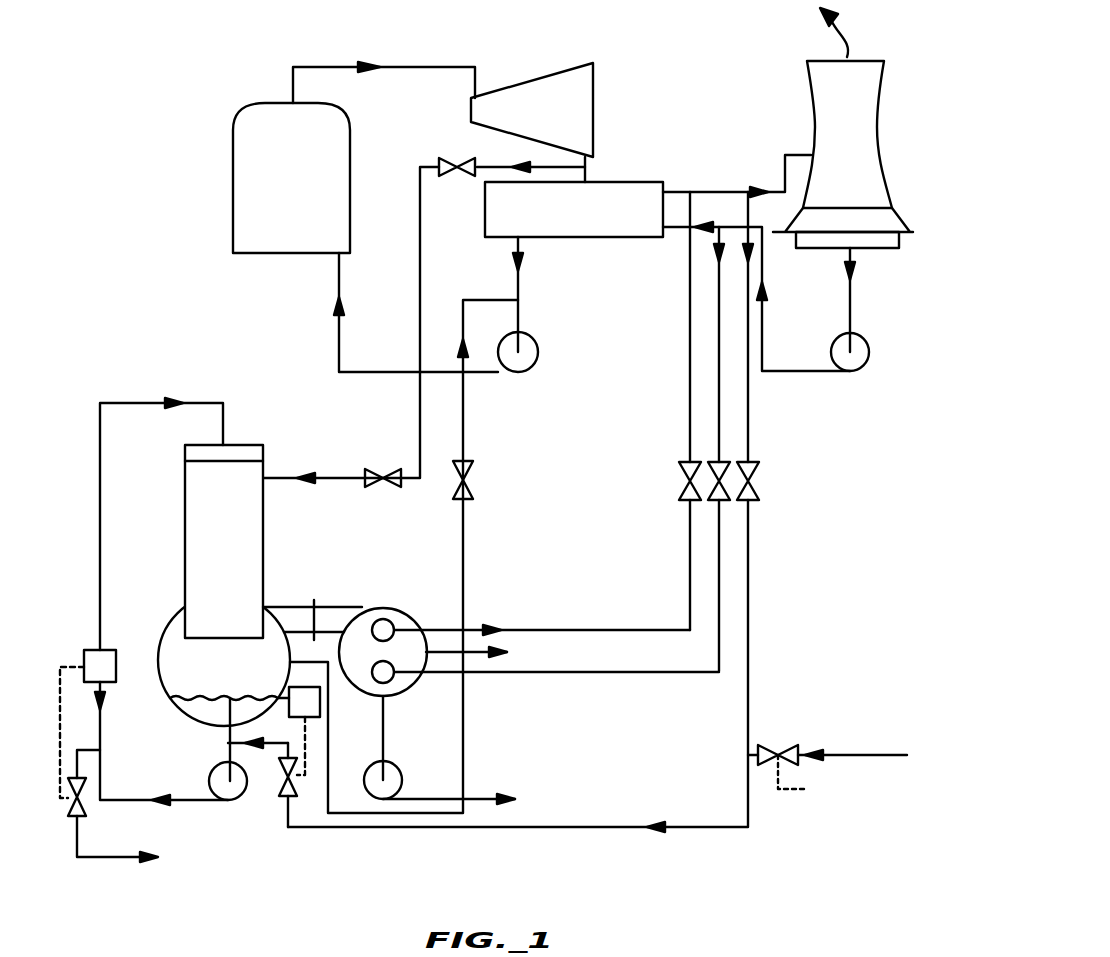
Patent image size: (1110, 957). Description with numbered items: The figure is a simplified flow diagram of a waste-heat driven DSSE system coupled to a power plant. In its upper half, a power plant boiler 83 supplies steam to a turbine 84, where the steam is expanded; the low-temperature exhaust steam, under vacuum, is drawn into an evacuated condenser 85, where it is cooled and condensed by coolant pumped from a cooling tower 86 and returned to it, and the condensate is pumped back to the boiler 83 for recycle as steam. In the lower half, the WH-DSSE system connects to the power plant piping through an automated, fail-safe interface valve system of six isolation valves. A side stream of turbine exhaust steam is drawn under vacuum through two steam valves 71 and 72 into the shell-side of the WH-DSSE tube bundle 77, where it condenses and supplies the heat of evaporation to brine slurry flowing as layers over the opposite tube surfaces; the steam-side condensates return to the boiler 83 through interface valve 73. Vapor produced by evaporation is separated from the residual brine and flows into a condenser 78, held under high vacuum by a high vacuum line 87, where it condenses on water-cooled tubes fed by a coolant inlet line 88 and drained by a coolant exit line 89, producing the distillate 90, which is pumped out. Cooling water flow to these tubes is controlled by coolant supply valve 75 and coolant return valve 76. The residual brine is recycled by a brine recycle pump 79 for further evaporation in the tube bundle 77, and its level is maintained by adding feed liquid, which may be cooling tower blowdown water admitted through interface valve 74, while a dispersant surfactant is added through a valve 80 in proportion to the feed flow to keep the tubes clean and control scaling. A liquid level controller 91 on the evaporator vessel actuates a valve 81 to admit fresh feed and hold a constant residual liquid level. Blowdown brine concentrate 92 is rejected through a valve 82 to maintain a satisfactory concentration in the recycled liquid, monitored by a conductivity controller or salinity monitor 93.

The steam valve 71 is at (466, 158).
The steam valve 72 is at (375, 469).
The interface valve 73 is at (470, 489).
The interface valve 74 is at (755, 488).
The coolant supply valve 75 is at (725, 462).
The coolant return valve 76 is at (682, 488).
The WH-DSSE tube bundle 77 is at (237, 609).
The condenser 78 is at (372, 657).
The brine recycle pump 79 is at (213, 770).
The valve 80 is at (827, 773).
The valve 81 is at (285, 795).
The valve 82 is at (88, 805).
The power plant boiler 83 is at (265, 103).
The turbine 84 is at (594, 88).
The condenser 85 is at (632, 182).
The cooling tower 86 is at (813, 97).
The high vacuum line 87 is at (509, 652).
The coolant inlet line 88 is at (592, 671).
The coolant exit line 89 is at (592, 630).
The distillate 90 is at (484, 799).
The liquid level controller 91 is at (296, 717).
The blowdown brine concentrate 92 is at (118, 857).
The conductivity controller or salinity monitor 93 is at (110, 650).